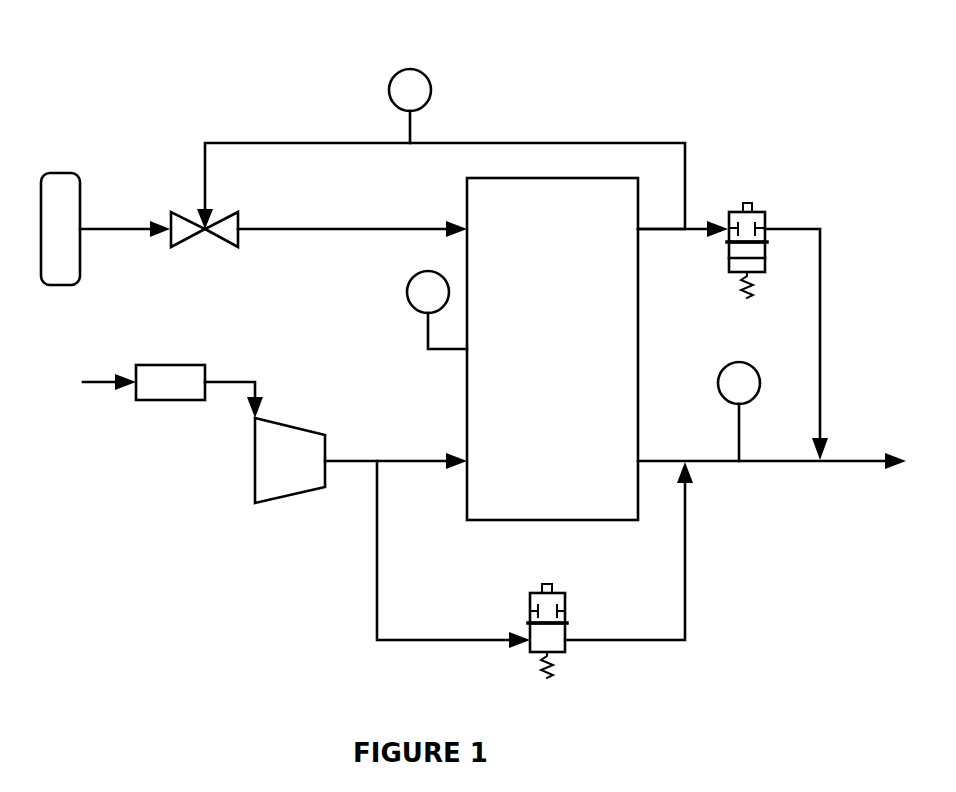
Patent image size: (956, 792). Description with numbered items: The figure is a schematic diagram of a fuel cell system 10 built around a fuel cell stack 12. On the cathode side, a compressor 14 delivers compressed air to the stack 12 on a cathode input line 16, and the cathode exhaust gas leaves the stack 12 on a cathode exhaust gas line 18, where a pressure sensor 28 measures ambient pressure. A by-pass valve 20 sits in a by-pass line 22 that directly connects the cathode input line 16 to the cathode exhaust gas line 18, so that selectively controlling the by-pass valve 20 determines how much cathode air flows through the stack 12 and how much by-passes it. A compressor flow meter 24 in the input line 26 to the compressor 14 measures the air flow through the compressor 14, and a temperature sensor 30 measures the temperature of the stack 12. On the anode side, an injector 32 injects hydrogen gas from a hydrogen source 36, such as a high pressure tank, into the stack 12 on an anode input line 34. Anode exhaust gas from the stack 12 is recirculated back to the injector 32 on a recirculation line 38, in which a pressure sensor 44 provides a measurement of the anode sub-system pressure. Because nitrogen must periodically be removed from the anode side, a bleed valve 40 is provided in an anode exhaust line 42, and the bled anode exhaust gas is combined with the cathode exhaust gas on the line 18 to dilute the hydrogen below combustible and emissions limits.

The fuel cell system 10 is at (535, 76).
The fuel cell stack 12 is at (639, 310).
The compressor 14 is at (298, 494).
The cathode input line 16 is at (385, 452).
The cathode exhaust gas line 18 is at (805, 462).
The by-pass valve 20 is at (566, 598).
The by-pass line 22 is at (375, 553).
The compressor flow meter 24 is at (172, 365).
The input line 26 is at (218, 385).
The pressure sensor 28 is at (718, 386).
The temperature sensor 30 is at (407, 293).
The injector 32 is at (204, 233).
The anode input line 34 is at (327, 228).
The hydrogen source 36 is at (62, 173).
The recirculation line 38 is at (583, 143).
The bleed valve 40 is at (765, 216).
The anode exhaust line 42 is at (821, 327).
The pressure sensor 44 is at (389, 93).